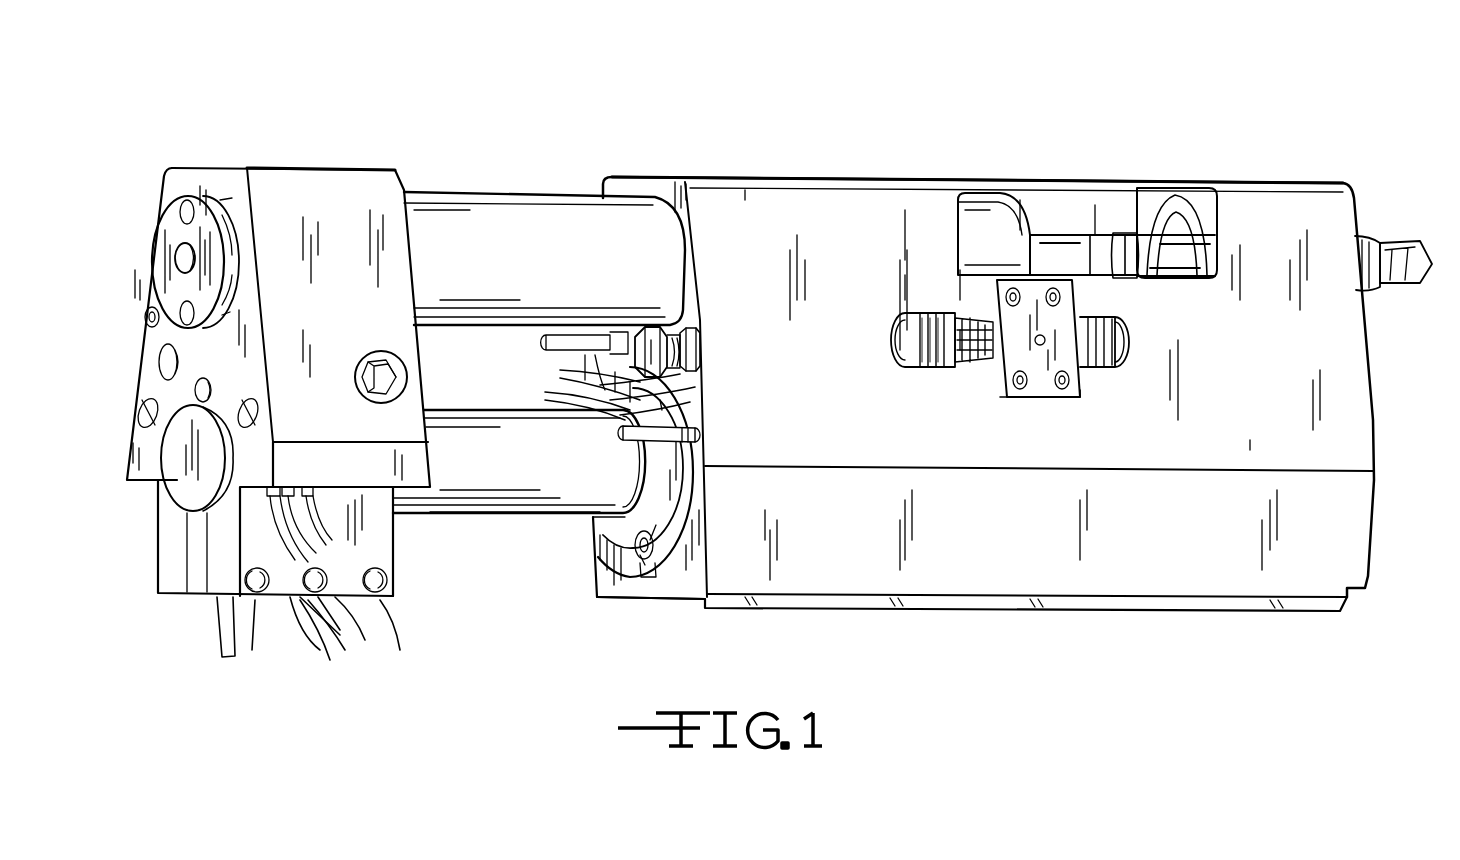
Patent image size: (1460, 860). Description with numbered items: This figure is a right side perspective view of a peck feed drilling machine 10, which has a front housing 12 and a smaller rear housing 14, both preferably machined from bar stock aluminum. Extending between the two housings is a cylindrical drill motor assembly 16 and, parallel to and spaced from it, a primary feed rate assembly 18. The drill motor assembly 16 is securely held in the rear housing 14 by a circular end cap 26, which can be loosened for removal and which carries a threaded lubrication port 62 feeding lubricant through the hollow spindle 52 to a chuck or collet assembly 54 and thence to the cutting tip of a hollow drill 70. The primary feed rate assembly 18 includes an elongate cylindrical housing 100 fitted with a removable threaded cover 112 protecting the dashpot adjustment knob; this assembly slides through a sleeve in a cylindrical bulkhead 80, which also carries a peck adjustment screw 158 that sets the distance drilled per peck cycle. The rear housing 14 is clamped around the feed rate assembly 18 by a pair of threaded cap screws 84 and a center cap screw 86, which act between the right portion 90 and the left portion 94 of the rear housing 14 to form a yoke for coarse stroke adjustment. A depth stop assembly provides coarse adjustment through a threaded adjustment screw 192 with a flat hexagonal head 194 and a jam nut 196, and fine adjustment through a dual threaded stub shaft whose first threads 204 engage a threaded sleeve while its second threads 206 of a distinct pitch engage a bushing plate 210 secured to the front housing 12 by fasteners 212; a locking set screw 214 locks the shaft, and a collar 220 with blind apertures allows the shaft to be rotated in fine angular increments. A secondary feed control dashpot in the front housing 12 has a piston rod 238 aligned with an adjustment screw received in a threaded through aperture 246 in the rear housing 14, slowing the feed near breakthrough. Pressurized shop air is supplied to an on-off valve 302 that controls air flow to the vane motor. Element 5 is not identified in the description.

The wire leads 5 is at (297, 615).
The peck feed drilling machine 10 is at (846, 88).
The front housing 12 is at (1375, 403).
The rear housing 14 is at (205, 168).
The cylindrical drill motor assembly 16 is at (495, 185).
The primary feed rate assembly 18 is at (548, 535).
The circular end cap 26 is at (170, 218).
The spindle 52 is at (1047, 248).
The chuck or collet assembly 54 is at (1138, 285).
The threaded lubrication port 62 is at (180, 262).
The hollow drill 70 is at (1408, 238).
The cylindrical bulkhead 80 is at (695, 492).
The threaded cap screws 84 is at (262, 600).
The center cap screw 86 is at (328, 577).
The right portion of the rear housing 90 is at (398, 567).
The left portion of the rear housing 94 is at (162, 550).
The elongate cylindrical housing 100 is at (560, 474).
The removable threaded cover 112 is at (178, 475).
The peck adjustment screw 158 is at (645, 560).
The threaded adjustment screw 192 is at (690, 322).
The flat, hexagonal head 194 is at (642, 332).
The jam nut 196 is at (703, 348).
The first region of threads 204 is at (928, 358).
The threads of a second pitch 206 is at (1125, 358).
The bushing plate 210 is at (1082, 398).
The fasteners 212 is at (1012, 288).
The locking set screw 214 is at (1040, 348).
The collar 220 is at (952, 318).
The piston rod 238 is at (555, 347).
The threaded through aperture 246 is at (145, 338).
The on-off valve 302 is at (400, 352).